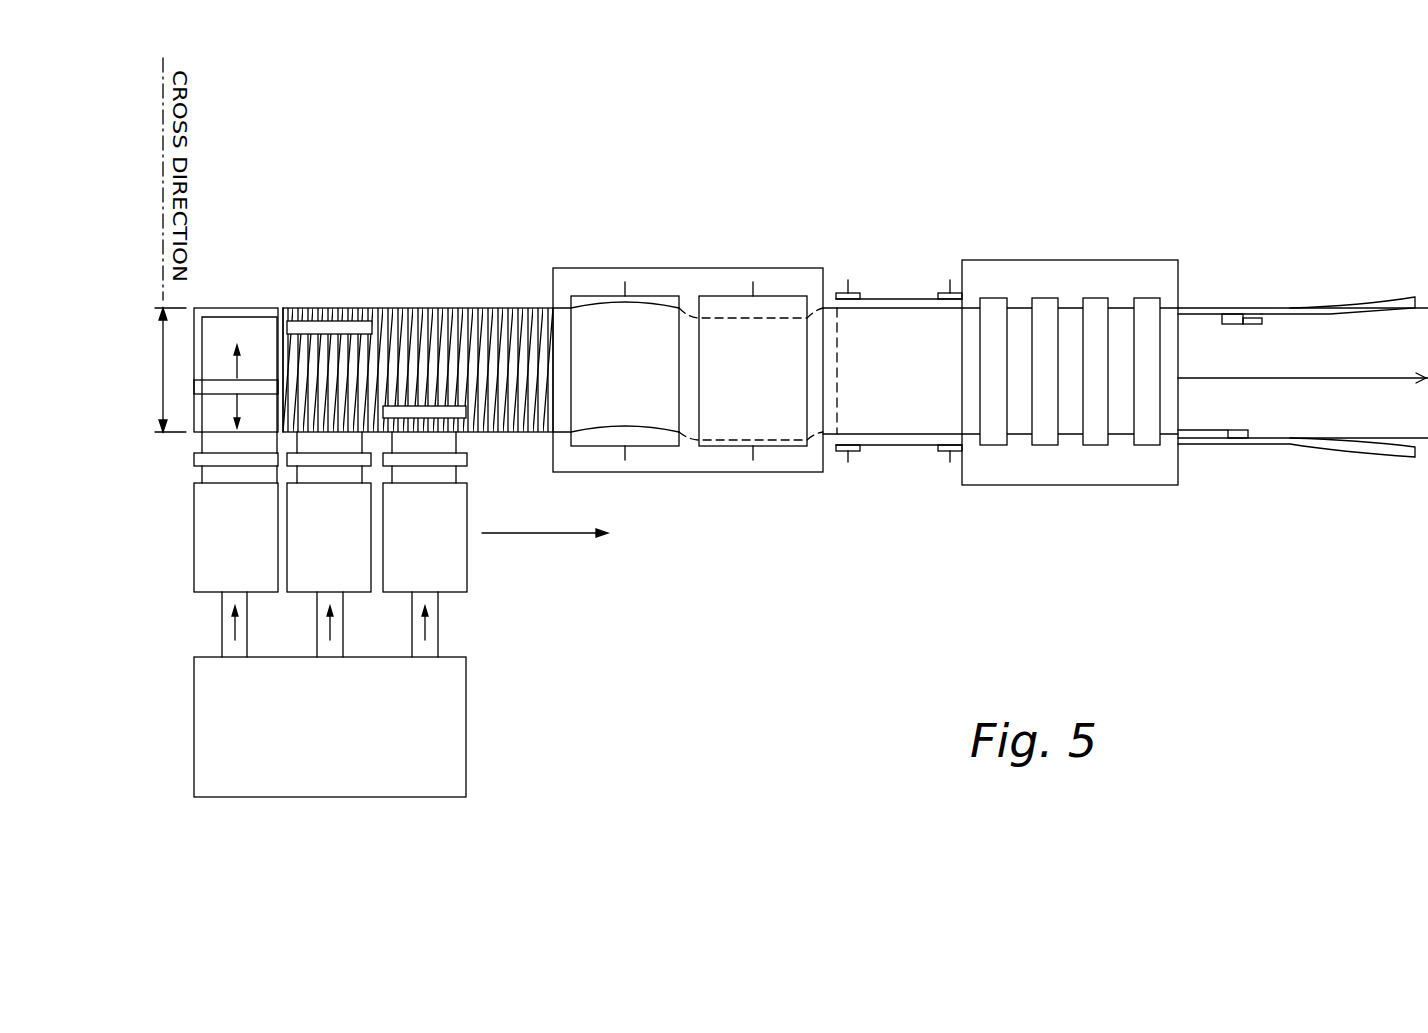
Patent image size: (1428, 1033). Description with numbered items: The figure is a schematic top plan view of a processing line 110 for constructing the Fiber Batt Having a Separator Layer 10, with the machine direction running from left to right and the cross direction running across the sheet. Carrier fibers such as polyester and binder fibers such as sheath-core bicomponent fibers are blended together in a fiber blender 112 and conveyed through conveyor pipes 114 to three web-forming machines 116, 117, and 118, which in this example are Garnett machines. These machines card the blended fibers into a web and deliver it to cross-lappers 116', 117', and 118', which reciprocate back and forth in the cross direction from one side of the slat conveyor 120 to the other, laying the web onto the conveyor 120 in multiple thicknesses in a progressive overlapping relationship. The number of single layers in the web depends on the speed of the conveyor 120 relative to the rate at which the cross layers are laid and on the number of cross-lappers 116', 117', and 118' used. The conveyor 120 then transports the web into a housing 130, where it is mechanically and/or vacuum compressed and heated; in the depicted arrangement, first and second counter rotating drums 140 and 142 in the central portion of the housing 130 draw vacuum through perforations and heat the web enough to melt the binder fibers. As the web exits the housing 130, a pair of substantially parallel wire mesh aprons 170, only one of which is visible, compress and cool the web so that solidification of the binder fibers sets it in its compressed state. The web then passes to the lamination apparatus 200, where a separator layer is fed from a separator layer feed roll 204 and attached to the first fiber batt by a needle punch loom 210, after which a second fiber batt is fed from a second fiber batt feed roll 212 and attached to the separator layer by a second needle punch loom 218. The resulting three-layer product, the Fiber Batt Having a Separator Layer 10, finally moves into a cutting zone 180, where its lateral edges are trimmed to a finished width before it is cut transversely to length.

The Fiber Batt Having a Separator Layer 10 is at (1363, 418).
The processing line 110 is at (658, 715).
The fiber blender 112 is at (467, 733).
The conveyor pipes 114 is at (248, 643).
The web-forming machine 116 is at (236, 512).
The web-forming machine 117 is at (329, 512).
The web-forming machine 118 is at (425, 512).
The cross-lapper 116' is at (236, 342).
The cross-lapper 117' is at (329, 293).
The cross-lapper 118' is at (463, 442).
The slat conveyor 120 is at (424, 308).
The housing 130 is at (782, 268).
The first counter rotating drum 140 is at (612, 435).
The second counter rotating drum 142 is at (795, 443).
The wire mesh aprons 170 is at (899, 408).
The cutting zone 180 is at (1360, 300).
The lamination apparatus 200 is at (1068, 260).
The separator layer feed roll 204 is at (990, 447).
The needle punch loom 210 is at (1040, 447).
The second fiber batt feed roll 212 is at (1090, 447).
The needle punch loom 218 is at (1142, 447).